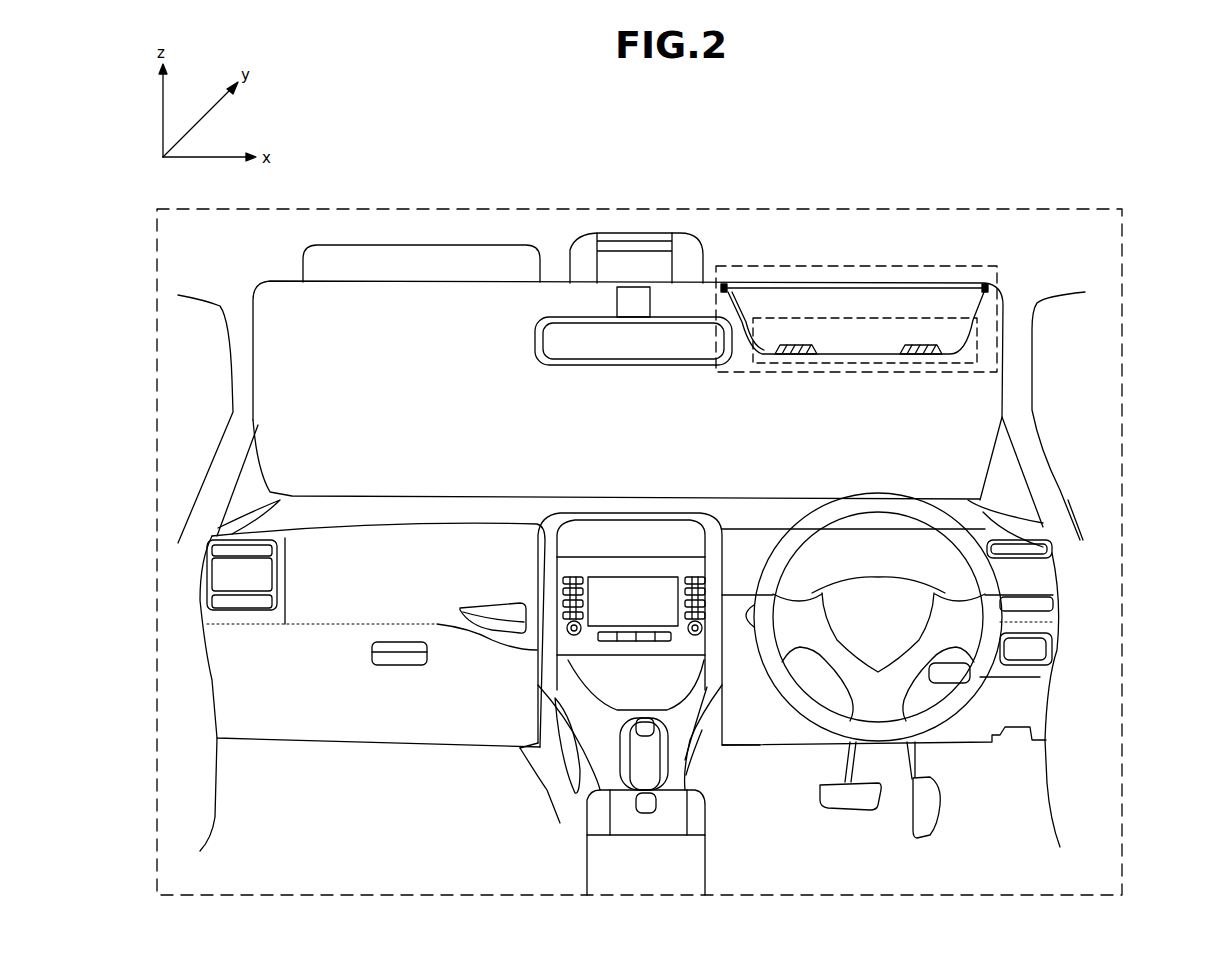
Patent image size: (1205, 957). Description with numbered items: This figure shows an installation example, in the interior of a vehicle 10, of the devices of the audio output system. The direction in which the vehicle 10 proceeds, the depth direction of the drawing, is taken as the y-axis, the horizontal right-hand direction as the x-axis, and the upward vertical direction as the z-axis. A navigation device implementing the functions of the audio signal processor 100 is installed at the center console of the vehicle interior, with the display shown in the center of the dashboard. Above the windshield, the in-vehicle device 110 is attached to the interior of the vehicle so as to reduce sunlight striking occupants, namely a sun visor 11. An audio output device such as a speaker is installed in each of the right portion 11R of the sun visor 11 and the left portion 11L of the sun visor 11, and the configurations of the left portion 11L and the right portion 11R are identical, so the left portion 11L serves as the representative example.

The vehicle 10 is at (1014, 209).
The sun visor 11 is at (1000, 333).
The left portion of the sun visor 11L is at (812, 345).
The right portion of the sun visor 11R is at (935, 345).
The audio signal processor 100 is at (600, 568).
The in-vehicle device 110 is at (947, 266).